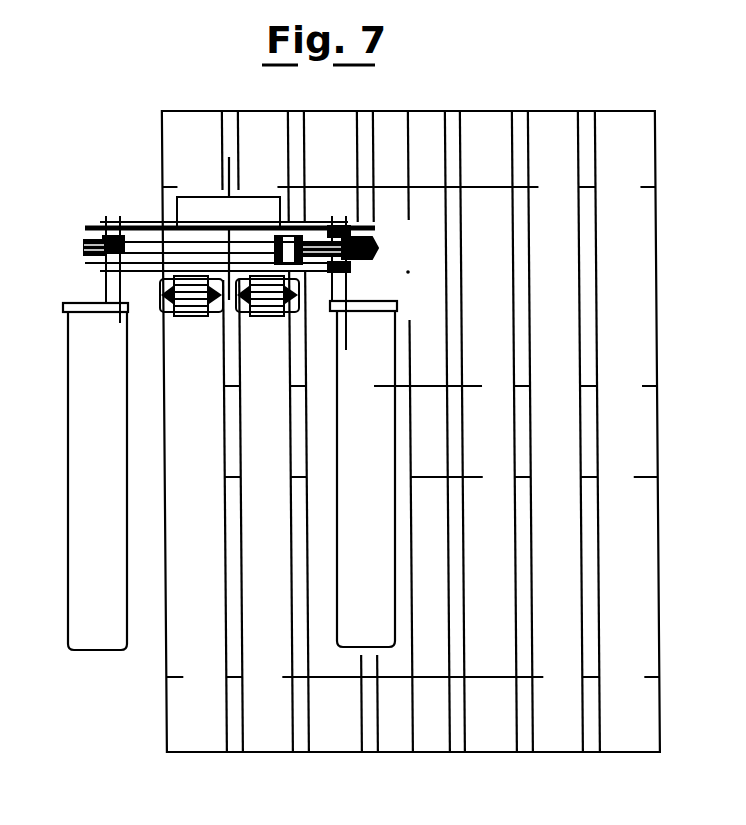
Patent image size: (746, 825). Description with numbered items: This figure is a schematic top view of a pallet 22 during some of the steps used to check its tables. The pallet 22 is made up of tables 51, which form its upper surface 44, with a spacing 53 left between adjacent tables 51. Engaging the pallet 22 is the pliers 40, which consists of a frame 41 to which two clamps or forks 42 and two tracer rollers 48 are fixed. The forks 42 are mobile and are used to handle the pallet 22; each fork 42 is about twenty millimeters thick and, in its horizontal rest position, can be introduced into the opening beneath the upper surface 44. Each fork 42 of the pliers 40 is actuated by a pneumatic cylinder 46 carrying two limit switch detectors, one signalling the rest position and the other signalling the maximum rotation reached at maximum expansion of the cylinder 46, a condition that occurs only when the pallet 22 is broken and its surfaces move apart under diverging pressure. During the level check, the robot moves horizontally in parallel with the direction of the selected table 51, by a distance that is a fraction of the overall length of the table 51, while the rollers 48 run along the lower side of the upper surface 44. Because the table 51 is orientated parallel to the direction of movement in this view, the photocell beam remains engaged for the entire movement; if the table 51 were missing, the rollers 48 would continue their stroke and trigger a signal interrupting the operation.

The pallet 22 is at (660, 166).
The pliers 40 is at (205, 186).
The frame 41 is at (310, 226).
The clamps or forks 42 is at (83, 451).
The upper surface of pallet 44 is at (538, 581).
The pneumatic cylinder 46 is at (220, 247).
The tracer rollers 48 is at (263, 312).
The table 51 is at (431, 733).
The spacing 53 is at (593, 725).